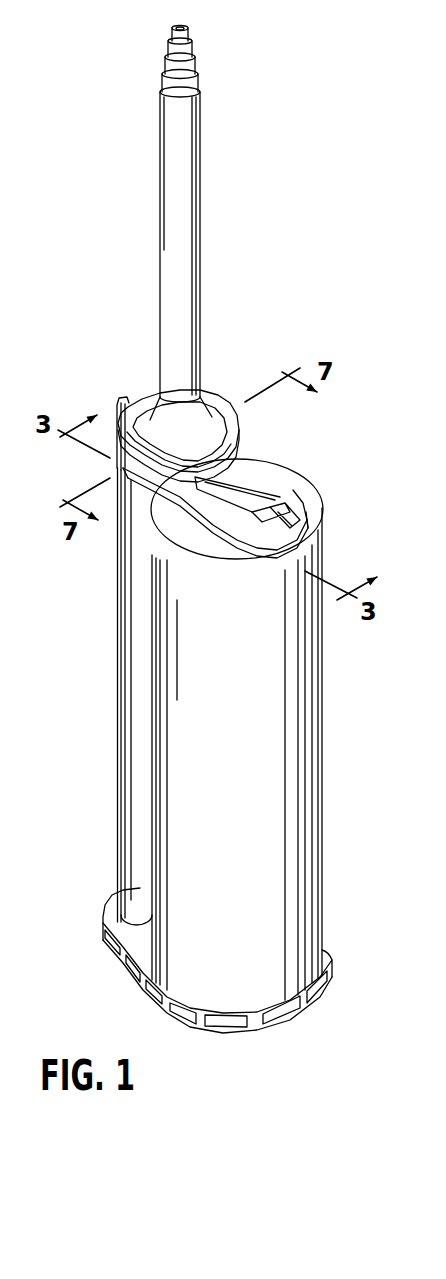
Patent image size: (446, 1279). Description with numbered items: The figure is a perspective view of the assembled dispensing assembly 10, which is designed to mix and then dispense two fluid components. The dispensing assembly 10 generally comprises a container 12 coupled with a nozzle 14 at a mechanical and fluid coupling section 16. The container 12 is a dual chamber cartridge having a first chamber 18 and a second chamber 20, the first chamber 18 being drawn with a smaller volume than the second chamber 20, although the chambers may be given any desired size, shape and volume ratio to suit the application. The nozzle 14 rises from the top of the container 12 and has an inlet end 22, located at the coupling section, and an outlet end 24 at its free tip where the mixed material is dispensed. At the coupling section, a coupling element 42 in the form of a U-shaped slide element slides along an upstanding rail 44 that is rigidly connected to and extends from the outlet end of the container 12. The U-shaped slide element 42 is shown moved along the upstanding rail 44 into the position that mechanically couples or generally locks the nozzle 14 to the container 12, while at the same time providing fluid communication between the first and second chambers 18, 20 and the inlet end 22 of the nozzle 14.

The dispensing assembly 10 is at (340, 228).
The container 12 is at (118, 717).
The nozzle 14 is at (200, 231).
The mechanical and fluid coupling section 16 is at (282, 437).
The first chamber 18 is at (120, 602).
The second chamber 20 is at (323, 730).
The inlet end 22 is at (207, 408).
The outlet end 24 is at (183, 24).
The coupling element 42 is at (118, 405).
The upstanding rail 44 is at (273, 482).